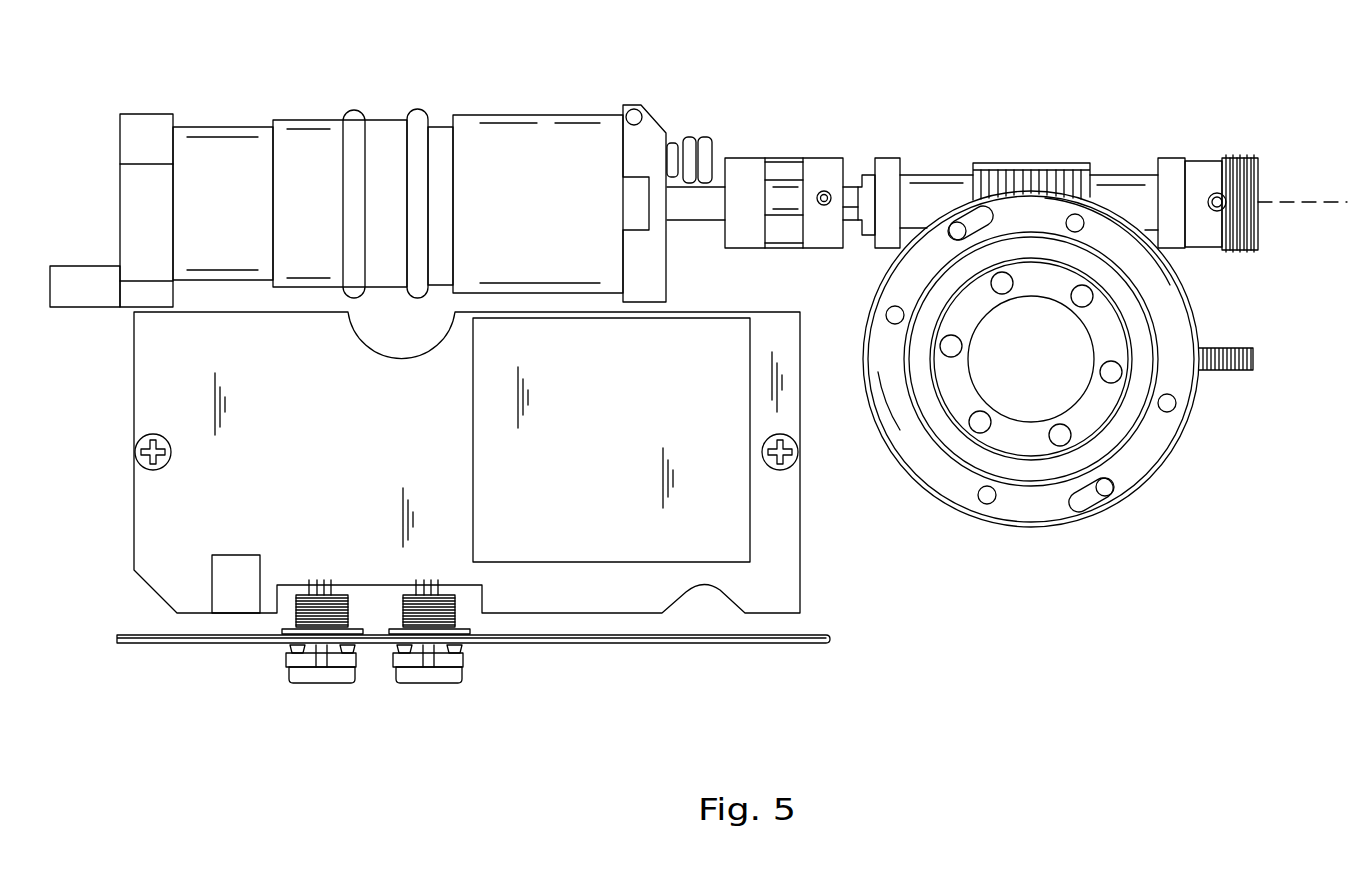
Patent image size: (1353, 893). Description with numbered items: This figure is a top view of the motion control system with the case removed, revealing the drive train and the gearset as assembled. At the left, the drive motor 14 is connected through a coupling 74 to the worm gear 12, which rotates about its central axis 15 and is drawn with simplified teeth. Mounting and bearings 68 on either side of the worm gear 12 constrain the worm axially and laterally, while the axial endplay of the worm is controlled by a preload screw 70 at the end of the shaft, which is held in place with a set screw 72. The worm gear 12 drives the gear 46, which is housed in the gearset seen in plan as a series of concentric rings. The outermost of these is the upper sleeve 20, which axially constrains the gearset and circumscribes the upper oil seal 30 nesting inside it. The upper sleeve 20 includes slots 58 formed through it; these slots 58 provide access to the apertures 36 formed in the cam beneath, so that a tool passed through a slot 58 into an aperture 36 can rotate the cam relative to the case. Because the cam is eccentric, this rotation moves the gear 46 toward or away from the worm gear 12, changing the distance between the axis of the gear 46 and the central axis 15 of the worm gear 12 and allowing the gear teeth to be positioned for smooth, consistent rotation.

The worm gear 12 is at (1035, 168).
The motor 14 is at (547, 148).
The central axis 15 is at (1308, 203).
The upper sleeve 20 is at (930, 465).
The upper oil seal 30 is at (1015, 470).
The apertures 36 is at (957, 224).
The gear 46 is at (1114, 342).
The slots 58 is at (969, 214).
The bearings 68 is at (888, 158).
The preload screw 70 is at (1238, 153).
The set screw 72 is at (1214, 193).
The coupling 74 is at (761, 158).